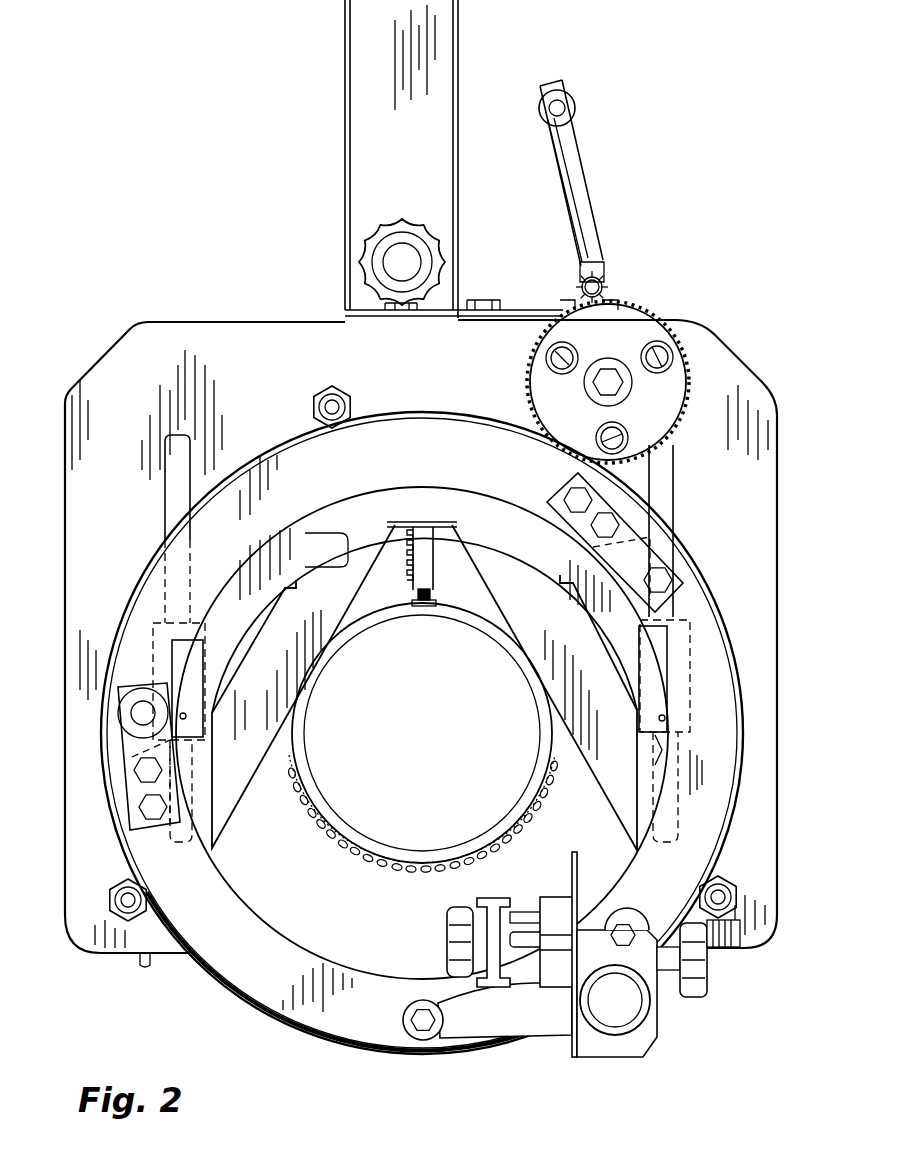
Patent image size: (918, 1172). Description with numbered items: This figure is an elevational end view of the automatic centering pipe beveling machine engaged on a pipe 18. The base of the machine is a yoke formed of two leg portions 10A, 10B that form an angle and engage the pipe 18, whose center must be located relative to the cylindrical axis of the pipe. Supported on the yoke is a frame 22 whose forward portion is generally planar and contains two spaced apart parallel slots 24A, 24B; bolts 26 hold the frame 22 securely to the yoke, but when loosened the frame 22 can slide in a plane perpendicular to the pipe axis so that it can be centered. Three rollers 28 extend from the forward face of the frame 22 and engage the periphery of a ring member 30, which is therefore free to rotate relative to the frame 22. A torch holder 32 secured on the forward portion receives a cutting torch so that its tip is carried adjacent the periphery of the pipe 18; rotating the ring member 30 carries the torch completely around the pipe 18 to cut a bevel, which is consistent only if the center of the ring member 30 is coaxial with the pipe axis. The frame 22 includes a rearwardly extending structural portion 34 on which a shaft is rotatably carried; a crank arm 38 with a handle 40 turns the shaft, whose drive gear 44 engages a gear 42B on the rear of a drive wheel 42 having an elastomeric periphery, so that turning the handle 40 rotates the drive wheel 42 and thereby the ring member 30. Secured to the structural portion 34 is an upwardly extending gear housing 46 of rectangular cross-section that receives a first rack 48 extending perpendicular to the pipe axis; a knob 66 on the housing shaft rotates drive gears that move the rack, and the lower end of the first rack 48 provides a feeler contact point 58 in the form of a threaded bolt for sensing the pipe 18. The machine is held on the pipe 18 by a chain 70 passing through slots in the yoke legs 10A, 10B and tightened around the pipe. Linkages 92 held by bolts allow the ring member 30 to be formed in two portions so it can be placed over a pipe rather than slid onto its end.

The yoke leg portion 10A is at (297, 658).
The yoke leg portion 10B is at (537, 680).
The pipe 18 is at (517, 655).
The frame 22 is at (750, 345).
The slot 24A is at (178, 502).
The slot 24B is at (663, 490).
The bolt 26 is at (603, 290).
The roller 28 is at (333, 387).
The ring member 30 is at (342, 1018).
The torch holder 32 is at (664, 1050).
The structural portion 34 is at (525, 318).
The crank arm 38 is at (570, 188).
The handle 40 is at (573, 102).
The drive wheel 42 is at (548, 387).
The gear 42B is at (657, 317).
The drive gear 44 is at (613, 292).
The gear housing 46 is at (360, 188).
The first rack 48 is at (425, 577).
The feeler contact point 58 is at (418, 607).
The knob 66 is at (410, 262).
The chain 70 is at (405, 873).
The linkage 92 is at (633, 558).